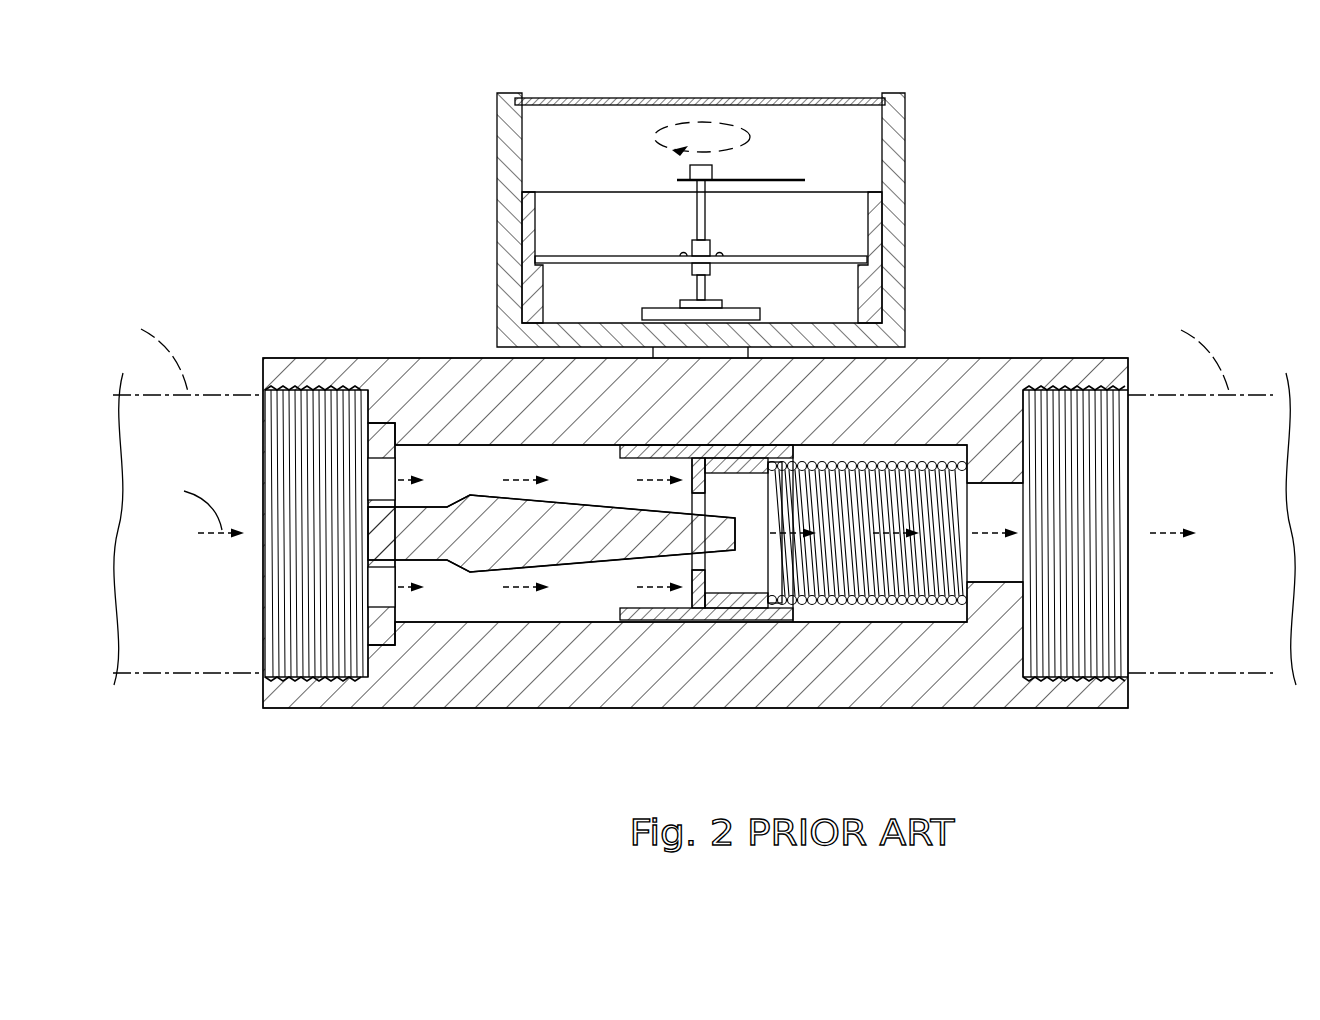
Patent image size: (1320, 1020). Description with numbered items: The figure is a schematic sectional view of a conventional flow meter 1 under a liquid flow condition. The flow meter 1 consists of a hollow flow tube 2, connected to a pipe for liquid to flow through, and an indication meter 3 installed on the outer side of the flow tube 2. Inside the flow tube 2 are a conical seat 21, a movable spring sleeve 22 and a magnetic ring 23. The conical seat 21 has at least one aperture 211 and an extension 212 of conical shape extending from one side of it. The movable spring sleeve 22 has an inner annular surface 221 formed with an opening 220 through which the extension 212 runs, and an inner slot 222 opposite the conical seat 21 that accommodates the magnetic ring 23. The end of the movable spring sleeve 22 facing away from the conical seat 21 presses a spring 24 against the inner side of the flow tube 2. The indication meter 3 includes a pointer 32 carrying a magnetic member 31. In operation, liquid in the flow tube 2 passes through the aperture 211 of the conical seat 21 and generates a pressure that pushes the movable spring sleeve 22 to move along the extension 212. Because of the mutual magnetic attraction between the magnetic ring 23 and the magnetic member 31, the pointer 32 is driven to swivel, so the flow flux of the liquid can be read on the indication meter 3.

The flow meter 1 is at (208, 172).
The flow tube 2 is at (1020, 343).
The indication meter 3 is at (920, 194).
The conical seat 21 is at (383, 620).
The aperture 211 is at (378, 468).
The extension 212 is at (510, 547).
The movable spring sleeve 22 is at (700, 580).
The opening 220 is at (700, 505).
The inner annular surface 221 is at (700, 600).
The inner slot 222 is at (762, 603).
The magnetic ring 23 is at (735, 598).
The spring 24 is at (912, 575).
The magnetic member 31 is at (662, 315).
The pointer 32 is at (677, 180).